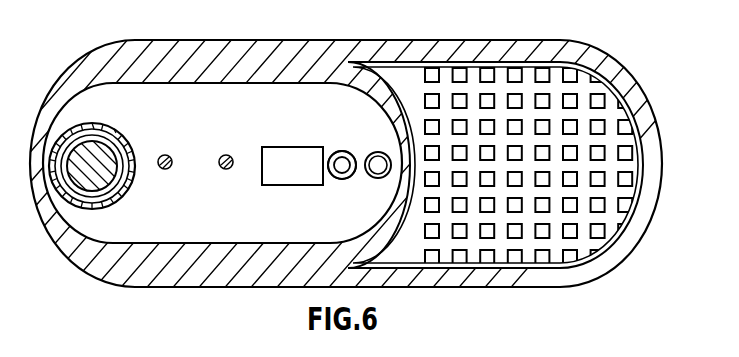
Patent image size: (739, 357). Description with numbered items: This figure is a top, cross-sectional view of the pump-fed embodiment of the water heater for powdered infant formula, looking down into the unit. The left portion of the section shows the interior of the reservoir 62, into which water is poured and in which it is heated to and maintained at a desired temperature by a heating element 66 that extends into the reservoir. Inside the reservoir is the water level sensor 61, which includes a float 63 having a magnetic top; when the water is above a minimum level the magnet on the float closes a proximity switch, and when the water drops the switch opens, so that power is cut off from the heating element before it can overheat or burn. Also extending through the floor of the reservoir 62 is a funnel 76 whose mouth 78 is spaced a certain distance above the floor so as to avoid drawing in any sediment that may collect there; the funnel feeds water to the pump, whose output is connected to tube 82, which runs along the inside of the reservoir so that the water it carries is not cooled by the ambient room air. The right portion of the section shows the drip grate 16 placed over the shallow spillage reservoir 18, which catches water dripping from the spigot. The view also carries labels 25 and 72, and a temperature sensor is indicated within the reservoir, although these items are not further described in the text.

The drip grate 16 is at (620, 110).
The spillage reservoir 18 is at (633, 0).
The cable 25 is at (72, 0).
The water level sensor 61 is at (118, 197).
The reservoir 62 is at (163, 110).
The float 63 is at (108, 143).
The heating element 66 is at (170, 154).
The temperature sensor 72 is at (270, 186).
The funnel 76 is at (341, 180).
The mouth 78 is at (331, 156).
The tube 82 is at (376, 179).